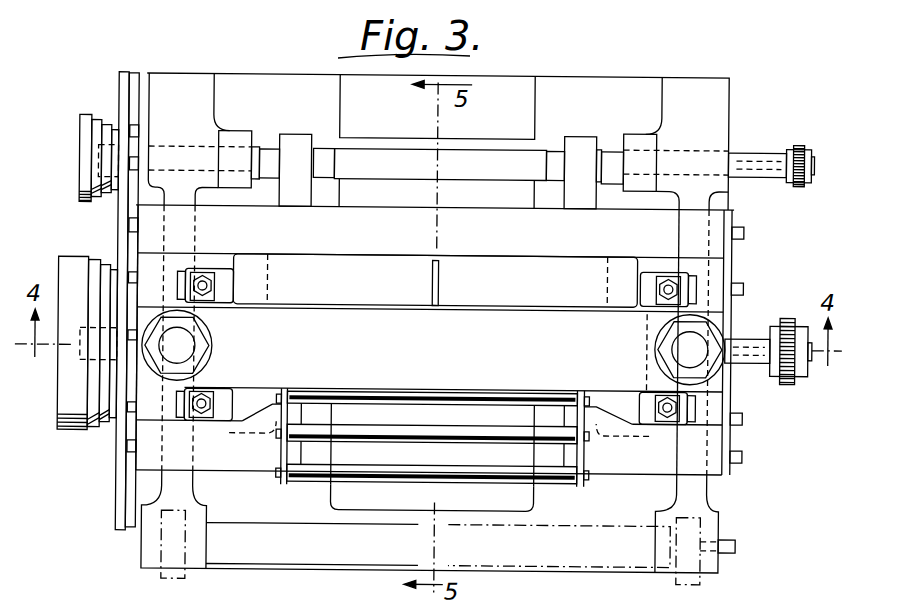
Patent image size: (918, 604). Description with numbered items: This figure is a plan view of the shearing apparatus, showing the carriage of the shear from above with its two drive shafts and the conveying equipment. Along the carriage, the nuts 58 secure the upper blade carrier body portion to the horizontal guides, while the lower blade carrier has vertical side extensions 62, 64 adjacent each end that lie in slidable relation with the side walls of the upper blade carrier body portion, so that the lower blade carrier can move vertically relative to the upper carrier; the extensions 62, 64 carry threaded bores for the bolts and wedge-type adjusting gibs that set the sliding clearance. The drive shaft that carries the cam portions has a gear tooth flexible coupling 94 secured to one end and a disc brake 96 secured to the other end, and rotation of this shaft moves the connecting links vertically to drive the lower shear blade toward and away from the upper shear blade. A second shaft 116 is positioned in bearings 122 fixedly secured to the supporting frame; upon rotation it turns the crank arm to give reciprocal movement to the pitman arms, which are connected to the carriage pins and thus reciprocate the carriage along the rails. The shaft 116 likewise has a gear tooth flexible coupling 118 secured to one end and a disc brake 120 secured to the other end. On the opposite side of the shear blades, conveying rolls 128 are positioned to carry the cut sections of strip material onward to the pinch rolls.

The nut 58 is at (203, 340).
The vertical side extension 62 is at (178, 414).
The vertical side extension 64 is at (178, 268).
The gear tooth flexible coupling 94 is at (787, 316).
The disc brake 96 is at (78, 247).
The shaft 116 is at (758, 160).
The gear tooth flexible coupling 118 is at (800, 182).
The disc brake 120 is at (88, 117).
The bearings 122 is at (240, 133).
The conveying rolls 128 is at (555, 472).